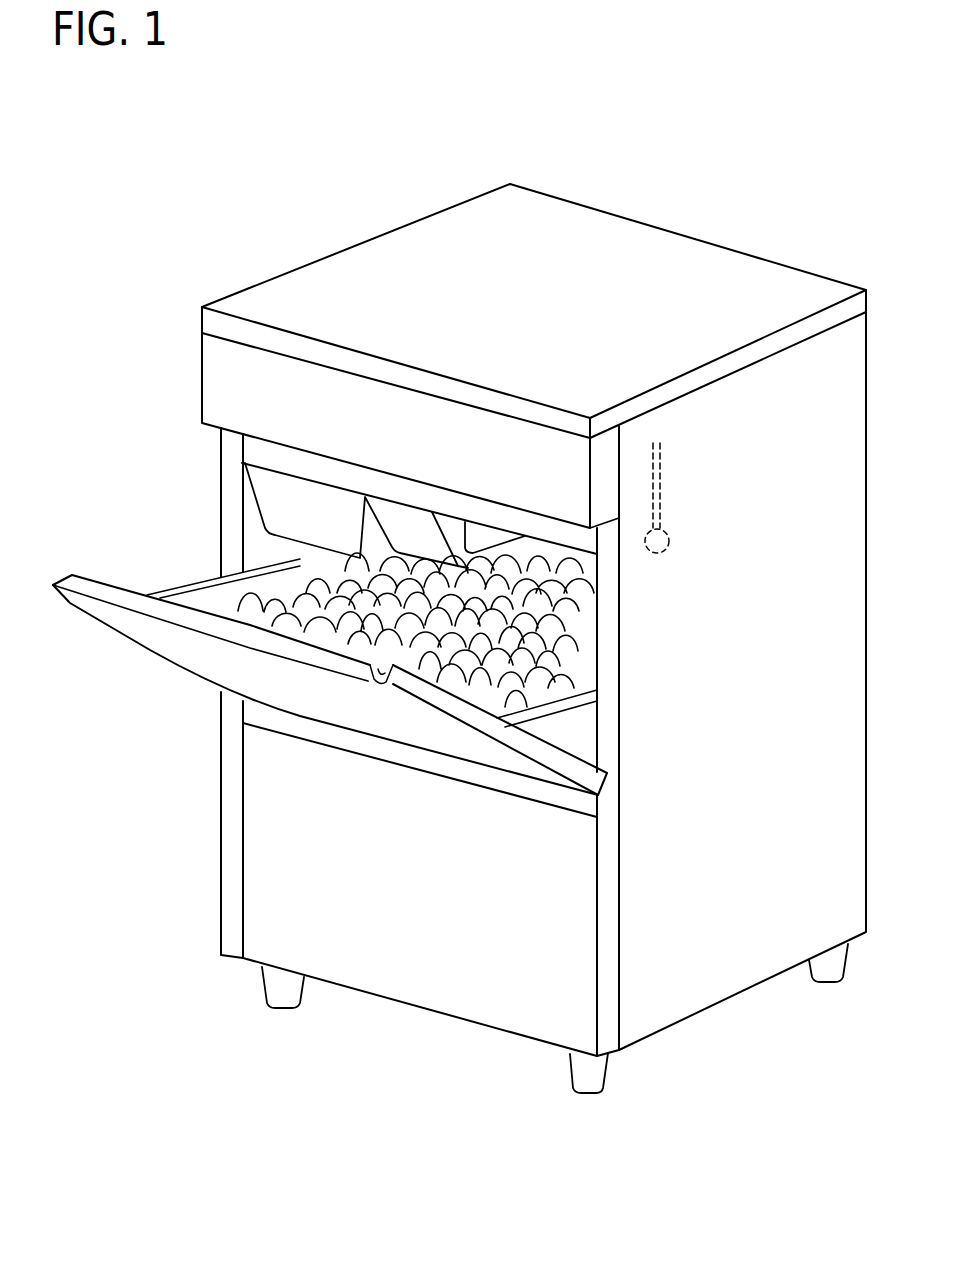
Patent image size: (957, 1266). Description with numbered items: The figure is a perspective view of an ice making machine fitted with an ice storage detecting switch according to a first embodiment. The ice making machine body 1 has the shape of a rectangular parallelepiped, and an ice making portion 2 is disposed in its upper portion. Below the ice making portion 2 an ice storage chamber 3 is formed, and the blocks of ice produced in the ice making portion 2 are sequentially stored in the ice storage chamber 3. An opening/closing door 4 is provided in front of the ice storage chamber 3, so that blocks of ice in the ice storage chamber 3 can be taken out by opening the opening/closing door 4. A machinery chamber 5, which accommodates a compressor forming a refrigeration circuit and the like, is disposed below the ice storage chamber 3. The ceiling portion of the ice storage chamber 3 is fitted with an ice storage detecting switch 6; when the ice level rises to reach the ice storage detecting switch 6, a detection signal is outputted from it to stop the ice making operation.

The ice making machine body 1 is at (375, 237).
The ice making portion 2 is at (277, 498).
The ice storage chamber 3 is at (262, 548).
The opening/closing door 4 is at (147, 652).
The machinery chamber 5 is at (255, 863).
The ice storage detecting switch 6 is at (677, 528).